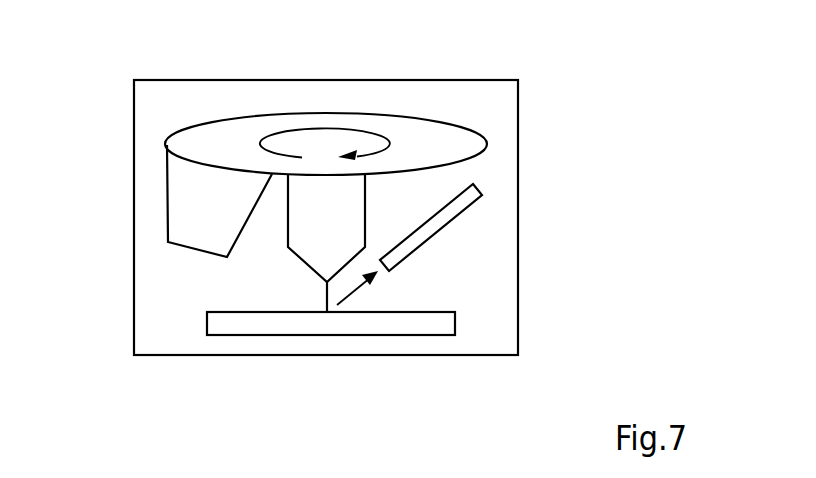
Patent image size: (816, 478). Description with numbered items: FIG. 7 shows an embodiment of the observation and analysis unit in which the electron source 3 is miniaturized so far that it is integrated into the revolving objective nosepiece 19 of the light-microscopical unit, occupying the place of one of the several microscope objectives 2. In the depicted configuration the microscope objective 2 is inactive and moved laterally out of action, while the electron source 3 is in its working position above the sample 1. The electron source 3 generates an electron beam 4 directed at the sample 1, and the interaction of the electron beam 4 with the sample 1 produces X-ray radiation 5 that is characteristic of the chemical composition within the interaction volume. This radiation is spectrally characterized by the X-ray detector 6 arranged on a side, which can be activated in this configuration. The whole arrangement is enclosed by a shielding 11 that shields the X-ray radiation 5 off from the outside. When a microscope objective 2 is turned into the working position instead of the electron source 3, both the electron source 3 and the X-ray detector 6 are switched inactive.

The sample 1 is at (440, 325).
The microscope objective 2 is at (178, 224).
The electron source 3 is at (308, 250).
The electron beam 4 is at (328, 293).
The X-ray radiation 5 is at (352, 292).
The X-ray detector 6 is at (478, 194).
The shielding 11 is at (518, 272).
The revolving objective nosepiece 19 is at (329, 122).